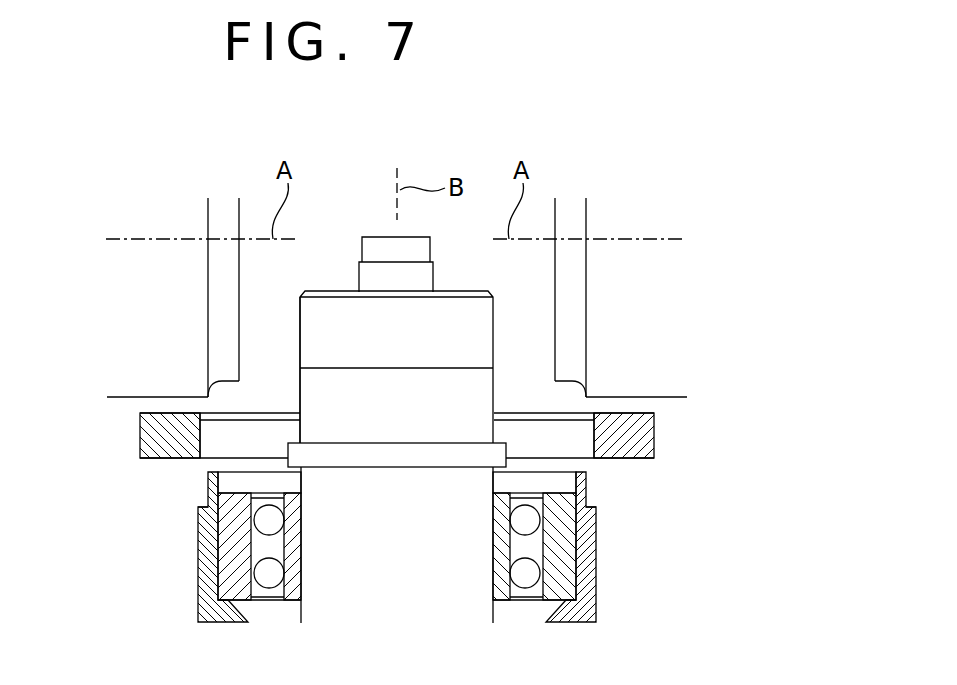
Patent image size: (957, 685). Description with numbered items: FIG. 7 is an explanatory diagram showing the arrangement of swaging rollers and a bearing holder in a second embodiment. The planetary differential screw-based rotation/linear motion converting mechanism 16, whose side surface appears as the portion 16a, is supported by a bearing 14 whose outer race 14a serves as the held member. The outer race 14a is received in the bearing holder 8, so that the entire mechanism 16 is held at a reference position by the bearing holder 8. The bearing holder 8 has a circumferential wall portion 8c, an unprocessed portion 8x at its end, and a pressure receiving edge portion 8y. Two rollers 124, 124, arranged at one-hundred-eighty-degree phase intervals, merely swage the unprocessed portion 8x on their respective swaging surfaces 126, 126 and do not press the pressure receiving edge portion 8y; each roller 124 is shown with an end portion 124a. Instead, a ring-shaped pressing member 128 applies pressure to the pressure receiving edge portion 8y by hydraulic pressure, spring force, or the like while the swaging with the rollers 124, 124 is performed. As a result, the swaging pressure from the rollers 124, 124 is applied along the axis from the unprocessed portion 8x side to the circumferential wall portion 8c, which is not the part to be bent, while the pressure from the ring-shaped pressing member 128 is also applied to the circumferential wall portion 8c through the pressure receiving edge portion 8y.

The bearing holder 8 is at (198, 606).
The circumferential wall portion 8c is at (198, 558).
The unprocessed portion 8x is at (208, 474).
The pressure receiving edge portion 8y is at (199, 508).
The bearing 14 is at (500, 520).
The outer race 14a is at (246, 492).
The planetary differential screw-based rotation/linear motion converting mechanism 16 is at (480, 337).
The side surface of rotor body 16a is at (316, 340).
The rollers 124 is at (239, 268).
The flange of cylindrical wall 124a is at (107, 398).
The swaging surfaces 126 is at (220, 386).
The ring-shaped pressing member 128 is at (140, 450).